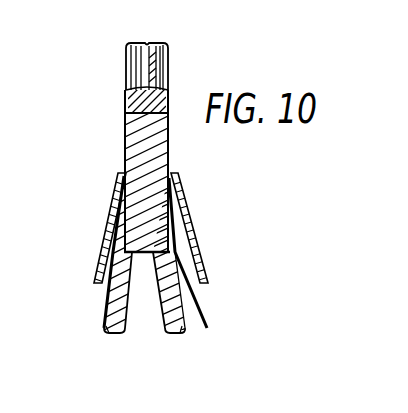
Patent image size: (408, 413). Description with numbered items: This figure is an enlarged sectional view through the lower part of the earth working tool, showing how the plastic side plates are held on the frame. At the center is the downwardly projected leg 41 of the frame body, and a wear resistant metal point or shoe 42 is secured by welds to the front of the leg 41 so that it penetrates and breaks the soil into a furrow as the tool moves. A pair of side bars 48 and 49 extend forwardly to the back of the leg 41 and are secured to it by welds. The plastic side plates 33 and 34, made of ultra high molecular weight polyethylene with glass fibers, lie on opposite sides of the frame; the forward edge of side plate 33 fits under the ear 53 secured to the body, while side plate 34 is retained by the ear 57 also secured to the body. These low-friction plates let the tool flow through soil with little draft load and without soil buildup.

The shoe 42 is at (157, 62).
The leg 41 is at (134, 142).
The ear 57 is at (109, 217).
The ear 53 is at (188, 213).
The side plate 34 is at (106, 312).
The side plate 33 is at (188, 297).
The side bar 48 is at (117, 328).
The side bar 49 is at (178, 328).